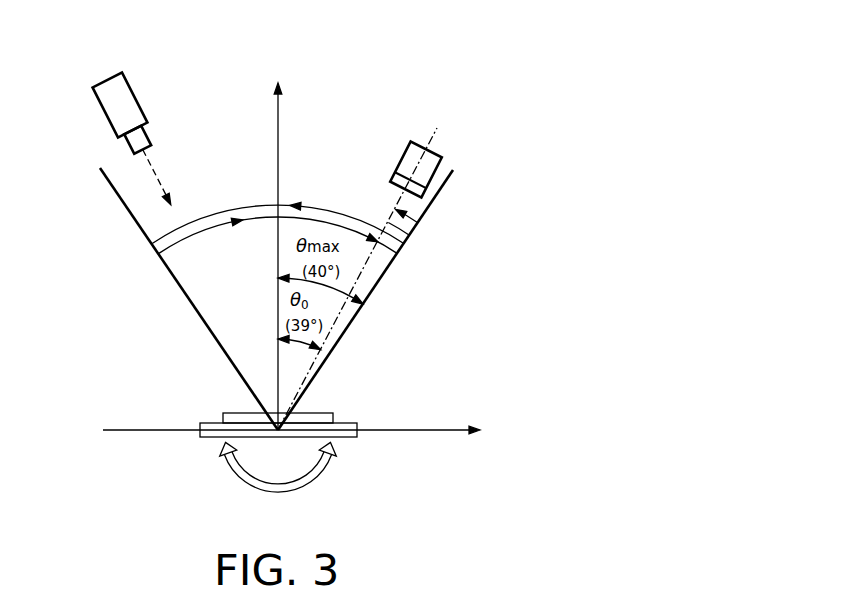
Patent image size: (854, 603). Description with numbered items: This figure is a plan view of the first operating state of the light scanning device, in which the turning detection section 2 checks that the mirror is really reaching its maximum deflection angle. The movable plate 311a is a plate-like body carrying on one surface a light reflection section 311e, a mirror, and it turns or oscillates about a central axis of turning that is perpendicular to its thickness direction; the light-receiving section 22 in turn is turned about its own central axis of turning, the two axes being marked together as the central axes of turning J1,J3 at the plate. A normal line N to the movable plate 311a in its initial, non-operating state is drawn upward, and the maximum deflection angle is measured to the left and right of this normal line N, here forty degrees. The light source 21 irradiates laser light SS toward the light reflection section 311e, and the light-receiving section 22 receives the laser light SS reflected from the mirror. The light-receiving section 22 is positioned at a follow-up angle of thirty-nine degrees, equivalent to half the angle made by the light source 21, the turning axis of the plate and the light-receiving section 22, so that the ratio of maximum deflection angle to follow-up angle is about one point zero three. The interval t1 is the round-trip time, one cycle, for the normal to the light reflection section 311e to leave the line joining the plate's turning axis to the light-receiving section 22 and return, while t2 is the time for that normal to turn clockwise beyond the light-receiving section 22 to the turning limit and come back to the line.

The turning detection section 2 is at (492, 55).
The light source 21 is at (137, 85).
The light-receiving section 22 is at (443, 143).
The movable plate 311a is at (348, 443).
The light reflection section 311e is at (328, 412).
The normal line N is at (279, 120).
The laser light SS is at (165, 187).
The round-trip time t1 is at (317, 211).
The turning-limit return time t2 is at (408, 213).
The central axes of turning J1,J3 is at (242, 440).